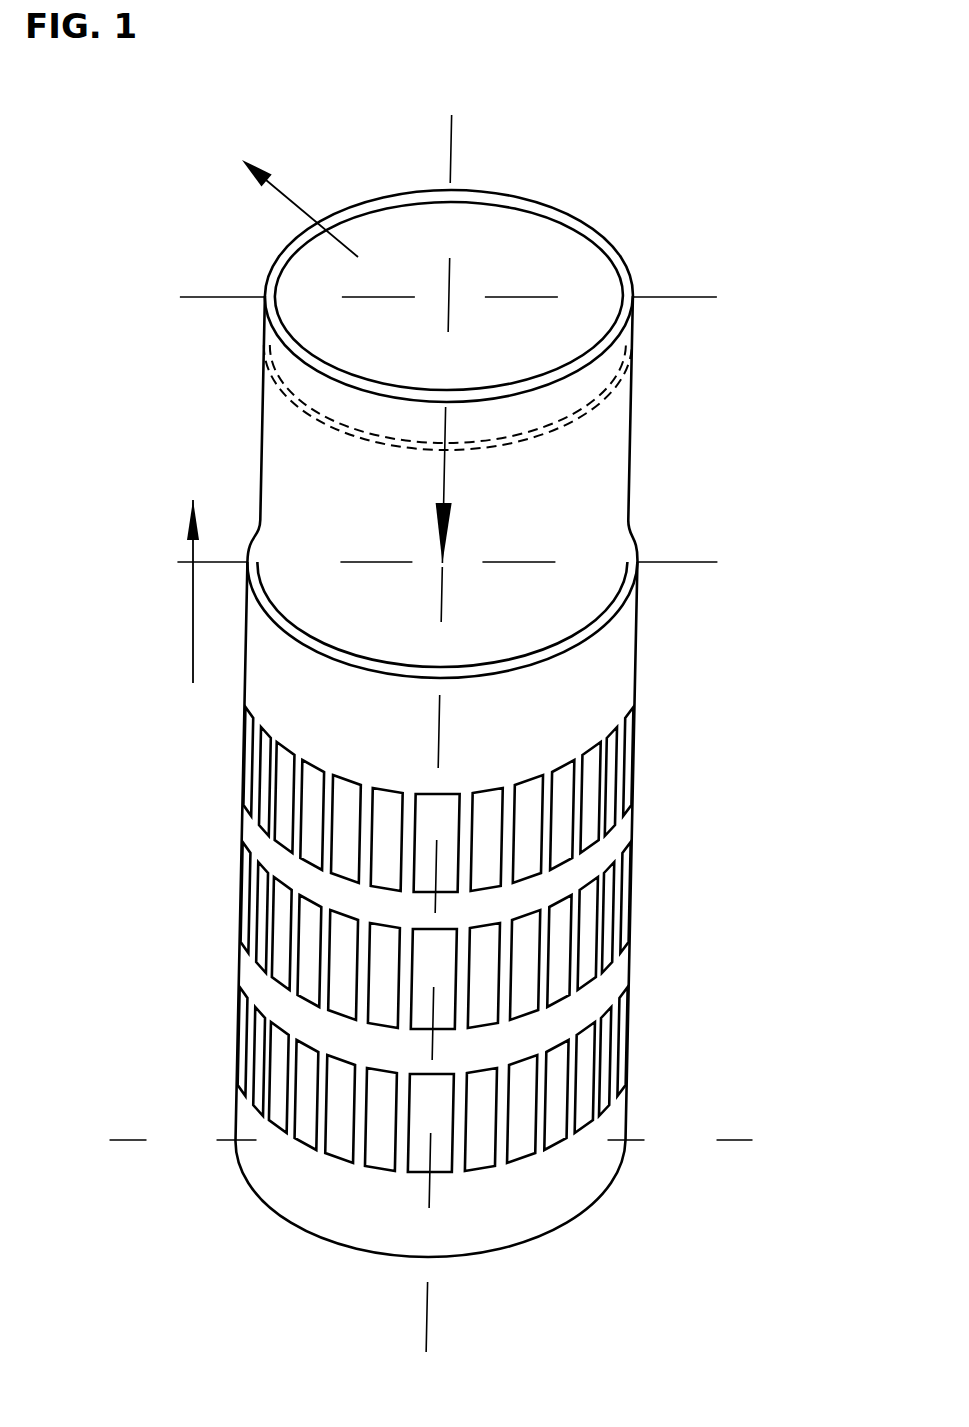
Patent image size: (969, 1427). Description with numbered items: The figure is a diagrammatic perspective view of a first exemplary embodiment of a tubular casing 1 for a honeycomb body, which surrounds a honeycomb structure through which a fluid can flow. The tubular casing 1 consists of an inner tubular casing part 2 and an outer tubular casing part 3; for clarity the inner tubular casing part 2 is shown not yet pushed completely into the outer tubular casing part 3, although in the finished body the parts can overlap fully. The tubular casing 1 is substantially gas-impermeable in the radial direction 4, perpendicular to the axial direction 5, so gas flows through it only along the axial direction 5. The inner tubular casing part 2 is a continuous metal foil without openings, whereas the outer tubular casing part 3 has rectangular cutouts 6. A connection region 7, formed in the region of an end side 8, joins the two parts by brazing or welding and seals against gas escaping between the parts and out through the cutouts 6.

The tubular casing 1 is at (426, 733).
The inner tubular casing part 2 is at (479, 346).
The outer tubular casing part 3 is at (473, 909).
The radial direction 4 is at (295, 198).
The axial direction 5 is at (188, 597).
The cutouts 6 is at (613, 1033).
The connection region 7 is at (607, 400).
The end side 8 is at (558, 210).